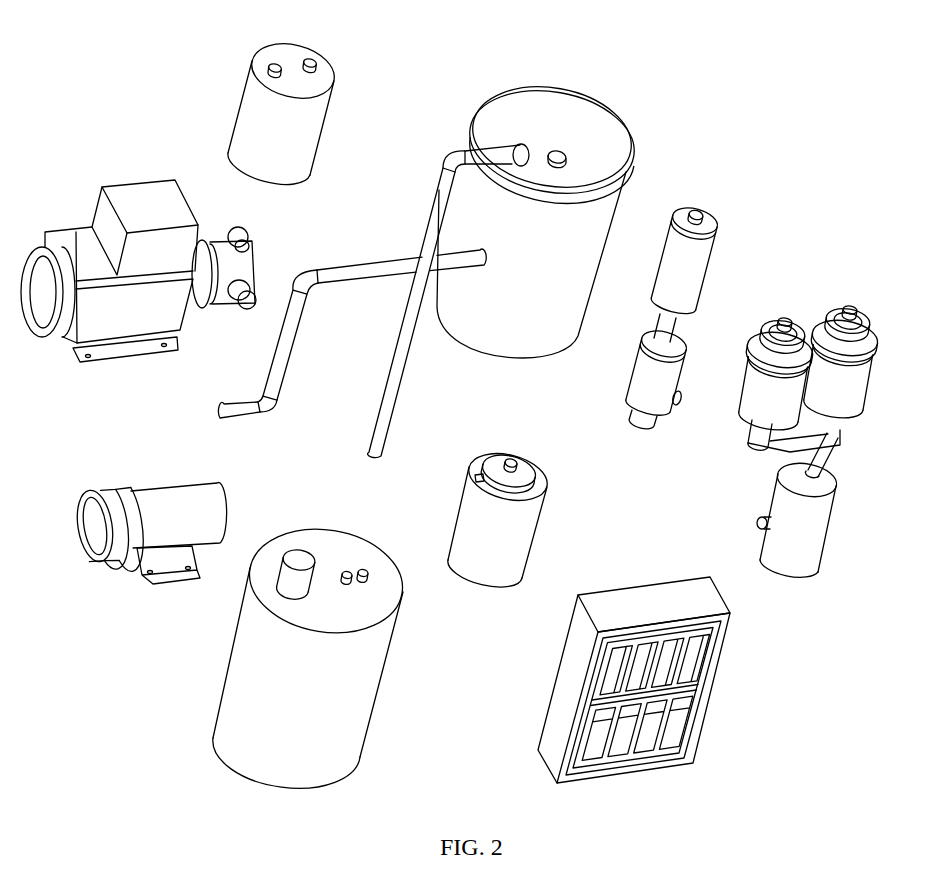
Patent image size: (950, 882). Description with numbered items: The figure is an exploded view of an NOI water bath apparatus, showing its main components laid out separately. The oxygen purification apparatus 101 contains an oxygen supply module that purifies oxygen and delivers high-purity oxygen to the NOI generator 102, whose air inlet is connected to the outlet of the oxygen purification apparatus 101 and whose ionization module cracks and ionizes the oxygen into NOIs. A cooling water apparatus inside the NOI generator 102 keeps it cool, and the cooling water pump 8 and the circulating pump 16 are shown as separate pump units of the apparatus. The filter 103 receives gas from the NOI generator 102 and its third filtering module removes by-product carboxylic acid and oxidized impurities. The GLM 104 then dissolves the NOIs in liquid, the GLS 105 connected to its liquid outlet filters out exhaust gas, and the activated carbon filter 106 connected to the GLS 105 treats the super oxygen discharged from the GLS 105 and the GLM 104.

The cooling water pump 8 is at (184, 500).
The circulating pump 16 is at (155, 215).
The oxygen purification apparatus 101 is at (227, 705).
The NOI generator 102 is at (463, 573).
The filter 103 is at (242, 143).
The GLM 104 is at (524, 130).
The GLS 105 is at (700, 254).
The activated carbon filter 106 is at (764, 552).